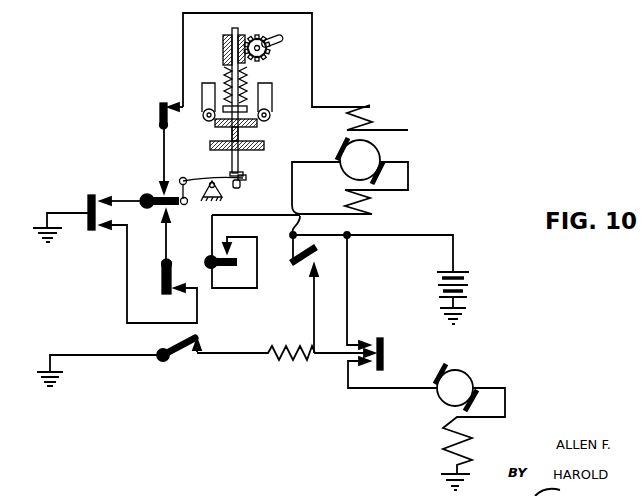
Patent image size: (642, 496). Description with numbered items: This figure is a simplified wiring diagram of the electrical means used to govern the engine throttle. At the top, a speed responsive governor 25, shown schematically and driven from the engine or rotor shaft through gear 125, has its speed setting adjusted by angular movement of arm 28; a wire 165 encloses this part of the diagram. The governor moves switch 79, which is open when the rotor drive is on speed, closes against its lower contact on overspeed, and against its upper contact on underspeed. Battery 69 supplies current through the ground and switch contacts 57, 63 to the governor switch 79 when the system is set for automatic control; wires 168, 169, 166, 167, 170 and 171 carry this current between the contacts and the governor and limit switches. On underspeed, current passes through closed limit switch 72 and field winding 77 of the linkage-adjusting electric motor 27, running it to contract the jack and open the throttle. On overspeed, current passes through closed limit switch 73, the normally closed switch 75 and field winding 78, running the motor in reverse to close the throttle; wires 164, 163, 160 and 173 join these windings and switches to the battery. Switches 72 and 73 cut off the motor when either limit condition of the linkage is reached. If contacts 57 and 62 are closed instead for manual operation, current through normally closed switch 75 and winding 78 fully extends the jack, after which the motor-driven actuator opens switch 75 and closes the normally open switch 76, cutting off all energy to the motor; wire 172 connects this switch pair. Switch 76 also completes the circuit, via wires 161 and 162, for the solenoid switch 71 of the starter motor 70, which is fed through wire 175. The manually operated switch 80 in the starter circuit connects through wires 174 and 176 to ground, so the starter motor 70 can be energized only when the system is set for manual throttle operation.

The wire 165 is at (247, 13).
The arm 28 is at (279, 44).
The speed responsive governor 25 is at (272, 107).
The gear 125 is at (267, 147).
The switch 79 is at (150, 178).
The switch 72 is at (158, 120).
The wire 166 is at (163, 146).
The switch contact 63 is at (106, 195).
The wire 168 is at (125, 198).
The wire 169 is at (68, 214).
The switch contact 57 is at (86, 226).
The switch contact 62 is at (103, 230).
The wire 170 is at (126, 293).
The wire 167 is at (168, 222).
The switch 73 is at (173, 275).
The wire 171 is at (190, 298).
The wire 173 is at (228, 215).
The switch 75 is at (233, 268).
The wire 172 is at (243, 290).
The switch 76 is at (293, 266).
The wire 164 is at (292, 178).
The field winding 77 is at (372, 112).
The linkage-adjusting electric motor 27 is at (418, 115).
The field winding 78 is at (380, 212).
The wire 163 is at (294, 235).
The wire 160 is at (358, 236).
The battery 69 is at (457, 270).
The wire 161 is at (348, 280).
The wire 162 is at (330, 300).
The wire 174 is at (210, 355).
The manually operated switch 80 is at (183, 348).
The wire 176 is at (90, 358).
The solenoid switch 71 is at (330, 369).
The wire 175 is at (358, 392).
The starter motor 70 is at (489, 370).